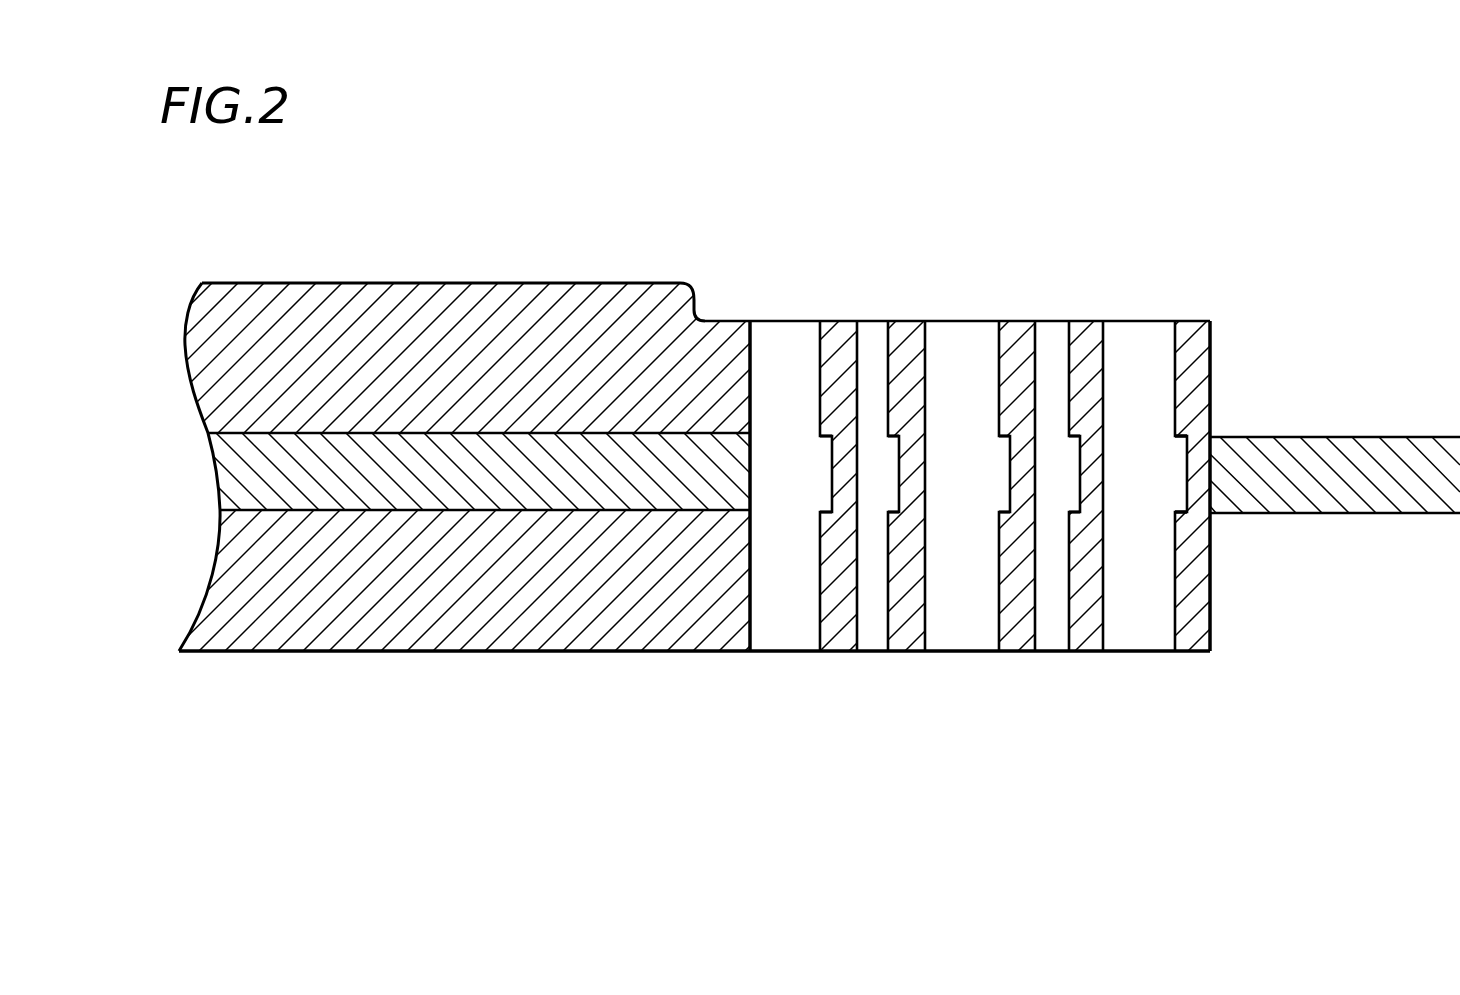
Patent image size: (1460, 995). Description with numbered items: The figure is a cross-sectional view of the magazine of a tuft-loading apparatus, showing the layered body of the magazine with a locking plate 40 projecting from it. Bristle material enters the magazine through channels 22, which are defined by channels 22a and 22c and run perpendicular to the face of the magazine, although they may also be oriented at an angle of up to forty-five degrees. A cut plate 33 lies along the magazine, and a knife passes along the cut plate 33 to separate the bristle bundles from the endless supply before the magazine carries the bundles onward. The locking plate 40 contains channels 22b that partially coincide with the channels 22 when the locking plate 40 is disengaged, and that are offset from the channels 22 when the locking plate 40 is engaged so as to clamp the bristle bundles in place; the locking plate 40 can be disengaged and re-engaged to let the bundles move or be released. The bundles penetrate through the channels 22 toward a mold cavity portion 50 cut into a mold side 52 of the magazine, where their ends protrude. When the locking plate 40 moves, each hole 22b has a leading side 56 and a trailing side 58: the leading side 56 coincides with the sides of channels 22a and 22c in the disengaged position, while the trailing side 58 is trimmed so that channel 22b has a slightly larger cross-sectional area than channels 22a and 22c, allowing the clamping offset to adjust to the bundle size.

The channels 22 is at (990, 541).
The channel 22a is at (1167, 387).
The channels in locking plate 22b is at (1167, 489).
The channel 22c is at (1141, 581).
The cut plate 33 is at (338, 652).
The locking plate 40 is at (218, 487).
The mold cavity portion 50 is at (793, 320).
The mold side 52 is at (681, 283).
The leading side 56 is at (751, 466).
The trailing side 58 is at (832, 496).